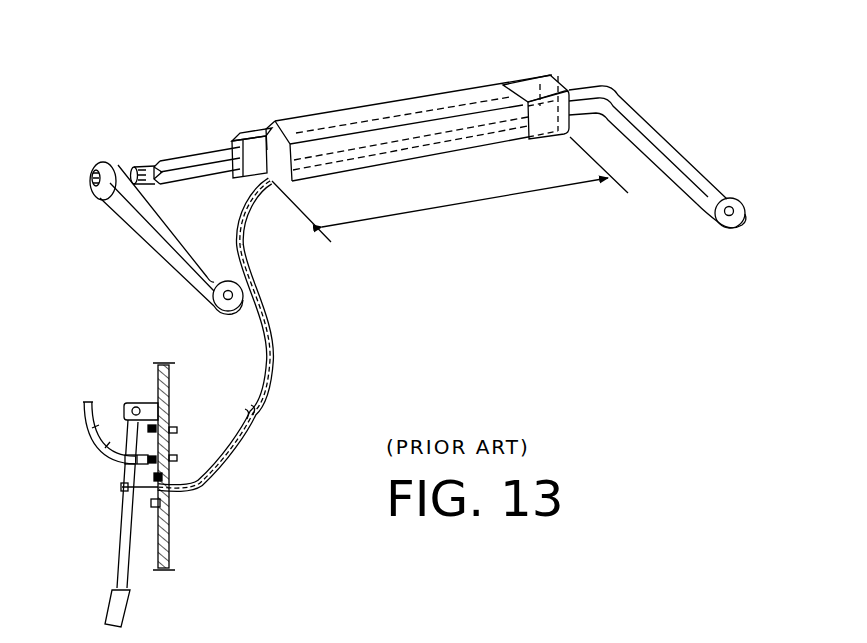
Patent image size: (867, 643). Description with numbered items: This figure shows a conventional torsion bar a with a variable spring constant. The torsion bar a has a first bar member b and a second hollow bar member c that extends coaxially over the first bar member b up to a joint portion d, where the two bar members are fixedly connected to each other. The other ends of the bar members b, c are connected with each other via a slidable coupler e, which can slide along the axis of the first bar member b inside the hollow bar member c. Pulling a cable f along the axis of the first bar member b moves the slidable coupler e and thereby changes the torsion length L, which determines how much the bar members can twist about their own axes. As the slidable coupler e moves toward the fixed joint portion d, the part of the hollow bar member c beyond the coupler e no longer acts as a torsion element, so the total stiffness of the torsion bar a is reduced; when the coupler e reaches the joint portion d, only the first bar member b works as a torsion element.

The torsion bar a is at (372, 82).
The first bar member b is at (197, 157).
The second hollow bar member c is at (473, 92).
The joint portion d is at (248, 137).
The slidable coupler e is at (537, 80).
The cable f is at (262, 412).
The torsion length L is at (450, 189).